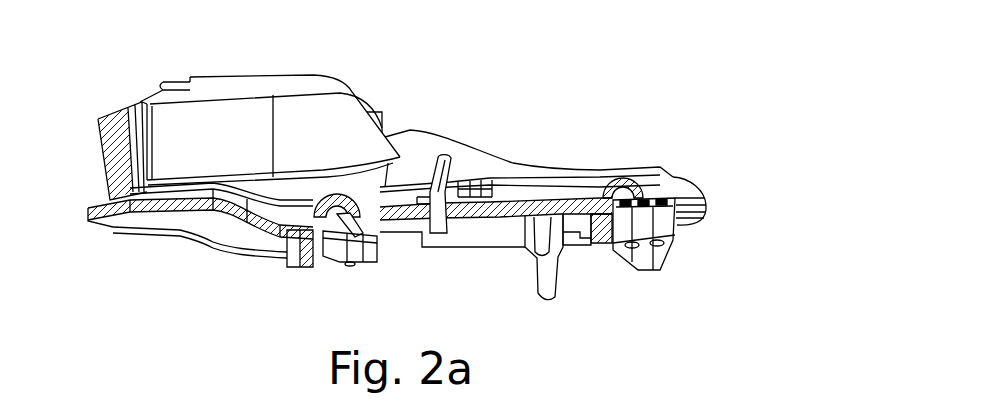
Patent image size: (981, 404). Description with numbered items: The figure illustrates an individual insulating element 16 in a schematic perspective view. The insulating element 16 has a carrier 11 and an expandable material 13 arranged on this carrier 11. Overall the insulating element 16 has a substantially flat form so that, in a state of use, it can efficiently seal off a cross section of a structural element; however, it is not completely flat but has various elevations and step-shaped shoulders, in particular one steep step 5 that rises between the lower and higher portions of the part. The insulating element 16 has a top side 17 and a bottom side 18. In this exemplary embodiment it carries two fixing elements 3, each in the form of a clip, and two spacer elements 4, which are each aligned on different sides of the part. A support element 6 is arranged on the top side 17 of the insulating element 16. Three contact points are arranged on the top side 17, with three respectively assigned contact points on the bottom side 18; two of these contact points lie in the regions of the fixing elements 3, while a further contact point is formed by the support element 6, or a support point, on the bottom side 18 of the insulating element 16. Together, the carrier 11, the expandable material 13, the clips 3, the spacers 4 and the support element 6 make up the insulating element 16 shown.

The fixing element 3 is at (333, 250).
The spacer element 4 is at (451, 158).
The steep step 5 is at (290, 113).
The support element 6 is at (373, 111).
The carrier 11 is at (410, 147).
The expandable material 13 is at (693, 190).
The insulating element 16 is at (552, 118).
The top side 17 is at (327, 172).
The bottom side 18 is at (214, 260).